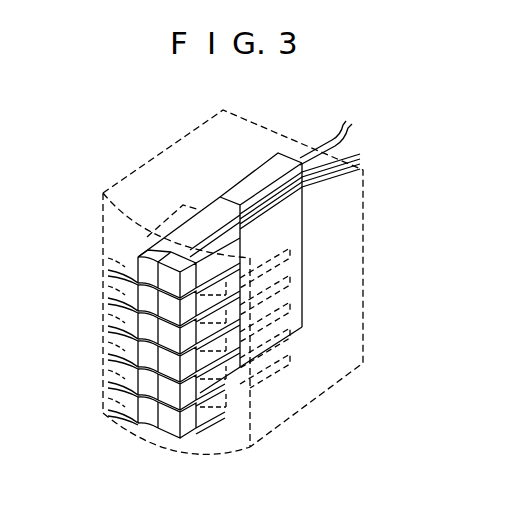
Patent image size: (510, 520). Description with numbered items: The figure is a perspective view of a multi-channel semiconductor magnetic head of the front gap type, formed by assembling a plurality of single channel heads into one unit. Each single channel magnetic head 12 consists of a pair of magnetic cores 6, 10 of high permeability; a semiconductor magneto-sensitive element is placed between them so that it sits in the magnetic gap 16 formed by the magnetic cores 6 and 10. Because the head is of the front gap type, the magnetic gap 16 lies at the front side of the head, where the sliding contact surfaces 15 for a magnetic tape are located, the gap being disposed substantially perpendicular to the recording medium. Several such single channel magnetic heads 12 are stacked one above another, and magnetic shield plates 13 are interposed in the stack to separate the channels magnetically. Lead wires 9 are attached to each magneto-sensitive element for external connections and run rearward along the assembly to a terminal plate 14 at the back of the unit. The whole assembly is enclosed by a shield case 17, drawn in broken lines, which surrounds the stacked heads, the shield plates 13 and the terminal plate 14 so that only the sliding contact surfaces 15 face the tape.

The magnetic core 6 is at (208, 213).
The lead wires 9 is at (330, 129).
The magnetic core 10 is at (172, 265).
The single channel magnetic head 12 is at (156, 257).
The magnetic shield plates 13 is at (288, 253).
The terminal plate 14 is at (298, 308).
The sliding contact surfaces 15 is at (143, 420).
The magnetic gap 16 is at (163, 420).
The shield case 17 is at (192, 125).